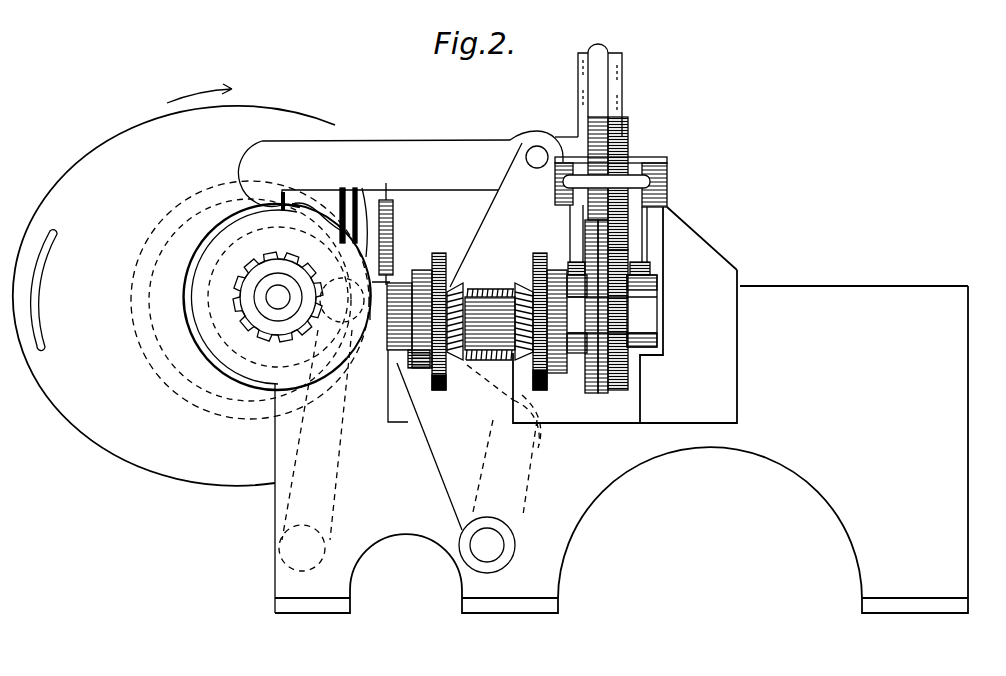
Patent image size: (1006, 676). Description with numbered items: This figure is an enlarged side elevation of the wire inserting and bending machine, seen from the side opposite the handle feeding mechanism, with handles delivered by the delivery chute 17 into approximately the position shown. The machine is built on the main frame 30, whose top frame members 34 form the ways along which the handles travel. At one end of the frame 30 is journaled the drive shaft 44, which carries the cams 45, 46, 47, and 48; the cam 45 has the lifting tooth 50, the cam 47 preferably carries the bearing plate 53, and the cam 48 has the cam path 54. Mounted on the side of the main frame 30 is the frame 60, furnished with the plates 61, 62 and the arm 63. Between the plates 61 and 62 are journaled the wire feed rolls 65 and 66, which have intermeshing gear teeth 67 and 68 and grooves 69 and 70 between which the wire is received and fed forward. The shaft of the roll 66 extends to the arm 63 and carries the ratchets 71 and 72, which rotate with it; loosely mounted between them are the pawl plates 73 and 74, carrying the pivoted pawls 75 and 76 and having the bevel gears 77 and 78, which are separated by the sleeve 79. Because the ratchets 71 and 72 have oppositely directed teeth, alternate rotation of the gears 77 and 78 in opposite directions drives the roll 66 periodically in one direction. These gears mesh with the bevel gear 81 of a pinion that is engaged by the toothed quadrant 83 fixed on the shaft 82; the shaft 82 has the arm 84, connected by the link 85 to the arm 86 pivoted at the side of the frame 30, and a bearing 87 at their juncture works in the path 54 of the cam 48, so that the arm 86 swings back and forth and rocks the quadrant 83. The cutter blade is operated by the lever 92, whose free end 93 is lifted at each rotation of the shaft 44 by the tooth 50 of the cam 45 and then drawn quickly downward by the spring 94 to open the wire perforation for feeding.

The delivery chute 17 is at (614, 84).
The main frame 30 is at (962, 491).
The top frame member 34 is at (880, 287).
The drive shaft 44 is at (266, 297).
The cam 45 is at (270, 376).
The cam 46 is at (203, 350).
The cam 47 is at (232, 483).
The cam 48 is at (192, 396).
The lifting tooth 50 is at (292, 206).
The bearing plate 53 is at (36, 300).
The cam path 54 is at (163, 342).
The frame 60 is at (739, 385).
The plate 61 is at (662, 350).
The plate 62 is at (577, 235).
The arm 63 is at (390, 348).
The wire feed roll 65 is at (588, 120).
The wire feed roll 66 is at (584, 317).
The gear teeth 67 is at (629, 133).
The gear teeth 68 is at (618, 332).
The groove 69 is at (605, 117).
The groove 70 is at (599, 317).
The ratchet 71 is at (548, 374).
The ratchet 72 is at (420, 309).
The pawl plate 73 is at (543, 390).
The pawl plate 74 is at (440, 390).
The pawl 75 is at (555, 272).
The pawl 76 is at (425, 369).
The bevel gear 77 is at (523, 288).
The bevel gear 78 is at (455, 288).
The sleeve 79 is at (490, 296).
The bevel gear 81 is at (490, 360).
The shaft 82 is at (503, 552).
The quadrant 83 is at (443, 490).
The arm 84 is at (528, 488).
The link 85 is at (507, 420).
The arm 86 is at (327, 494).
The bearing 87 is at (343, 293).
The lever 92 is at (560, 150).
The free end 93 is at (272, 190).
The spring 94 is at (393, 222).